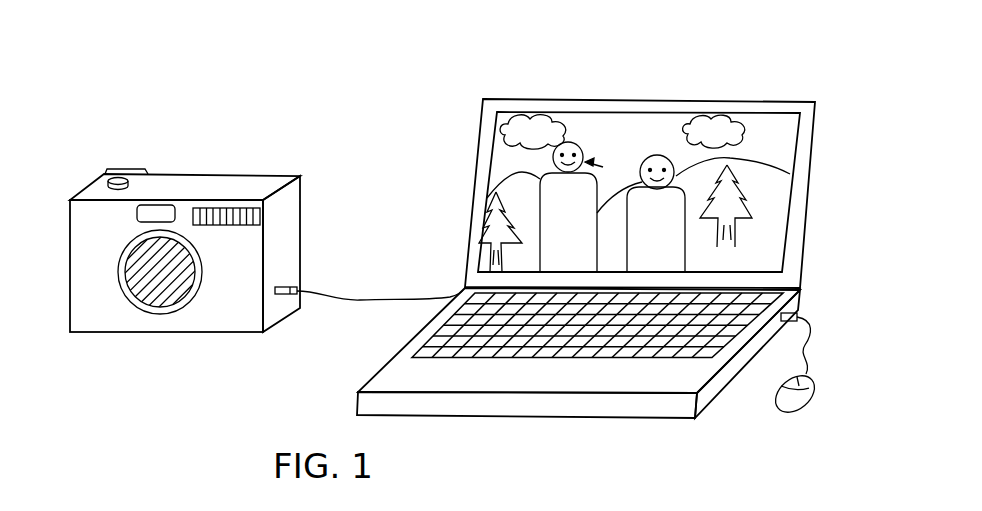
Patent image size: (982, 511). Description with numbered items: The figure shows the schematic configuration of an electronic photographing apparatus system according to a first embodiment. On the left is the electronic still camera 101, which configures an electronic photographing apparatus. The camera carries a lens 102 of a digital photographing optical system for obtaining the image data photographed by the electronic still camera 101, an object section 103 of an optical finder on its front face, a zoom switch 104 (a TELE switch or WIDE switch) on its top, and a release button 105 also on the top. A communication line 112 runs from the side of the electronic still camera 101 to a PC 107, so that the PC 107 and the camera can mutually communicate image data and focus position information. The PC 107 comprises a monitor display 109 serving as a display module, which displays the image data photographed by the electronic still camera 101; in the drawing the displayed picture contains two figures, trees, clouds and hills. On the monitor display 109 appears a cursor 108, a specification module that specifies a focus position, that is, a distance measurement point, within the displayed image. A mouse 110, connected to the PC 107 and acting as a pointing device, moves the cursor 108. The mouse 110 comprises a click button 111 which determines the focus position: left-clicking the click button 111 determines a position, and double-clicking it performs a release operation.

The electronic still camera 101 is at (257, 174).
The lens 102 is at (153, 307).
The object section of an optical finder 103 is at (157, 206).
The zoom switch 104 is at (128, 166).
The release button 105 is at (115, 190).
The PC 107 is at (795, 100).
The cursor 108 is at (603, 167).
The monitor display 109 is at (728, 115).
The mouse 110 is at (788, 413).
The click button 111 is at (810, 368).
The communication line 112 is at (300, 273).